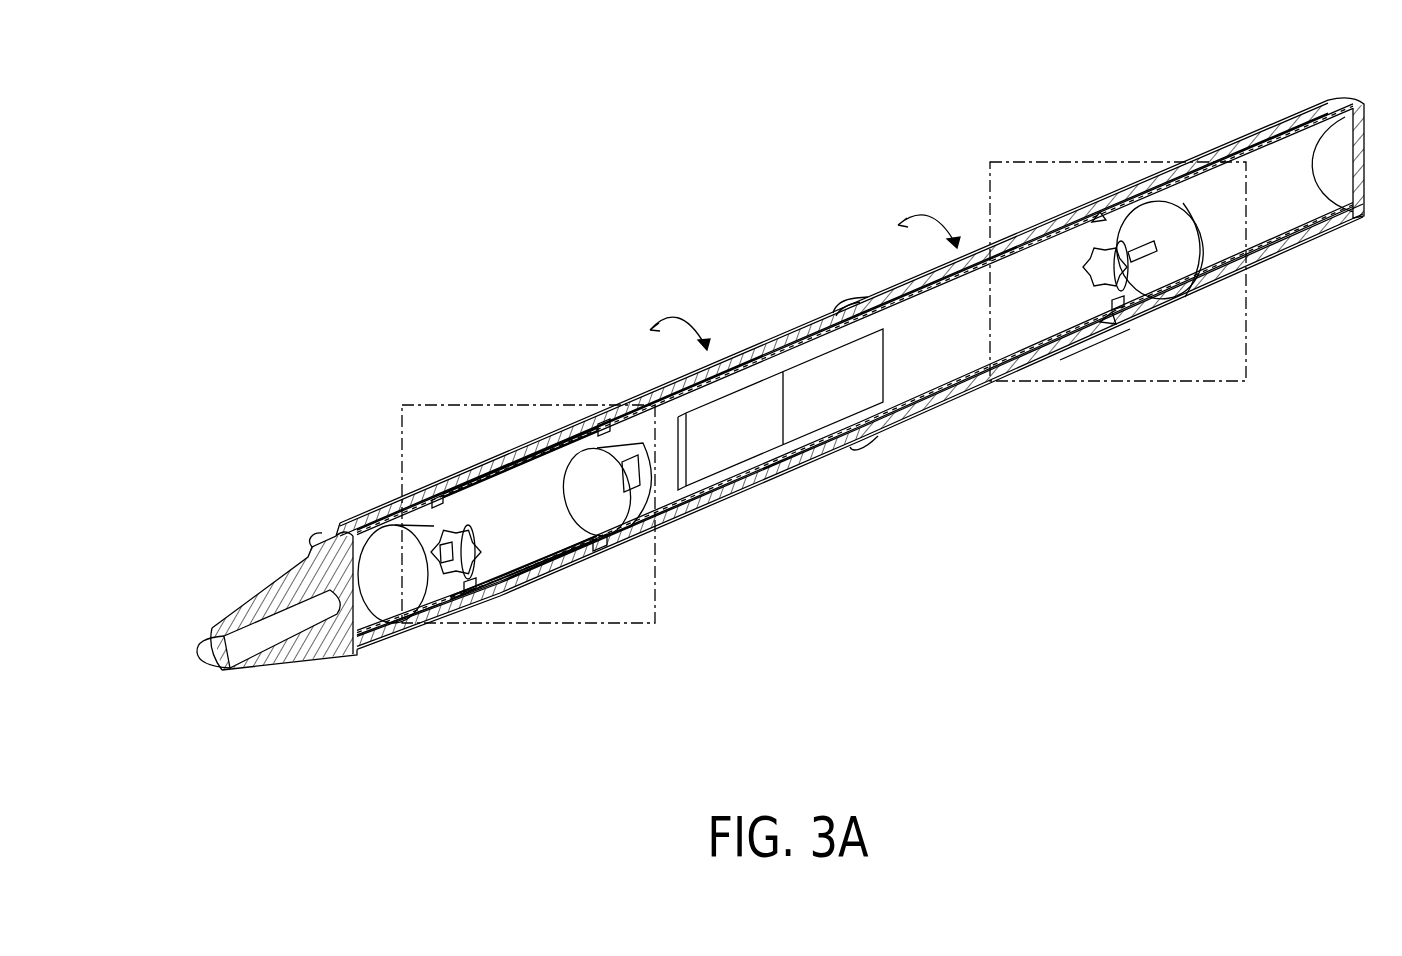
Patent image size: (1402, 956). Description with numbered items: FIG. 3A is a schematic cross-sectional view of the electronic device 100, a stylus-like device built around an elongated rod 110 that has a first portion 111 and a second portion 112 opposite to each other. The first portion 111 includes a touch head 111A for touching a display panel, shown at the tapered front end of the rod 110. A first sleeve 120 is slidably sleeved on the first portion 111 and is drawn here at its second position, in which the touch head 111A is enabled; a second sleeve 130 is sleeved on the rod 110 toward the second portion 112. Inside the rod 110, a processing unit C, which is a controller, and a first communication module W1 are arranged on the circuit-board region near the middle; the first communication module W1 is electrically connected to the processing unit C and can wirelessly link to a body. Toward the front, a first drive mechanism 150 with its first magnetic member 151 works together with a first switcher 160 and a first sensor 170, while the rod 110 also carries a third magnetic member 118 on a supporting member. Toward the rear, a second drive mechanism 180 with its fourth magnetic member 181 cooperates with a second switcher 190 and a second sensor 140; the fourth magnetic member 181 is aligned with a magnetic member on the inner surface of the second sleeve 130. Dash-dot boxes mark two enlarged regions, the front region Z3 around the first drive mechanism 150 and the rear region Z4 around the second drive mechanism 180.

The electronic device 100 is at (1338, 745).
The rod 110 is at (1001, 654).
The first portion 111 is at (390, 643).
The touch head 111A is at (201, 650).
The second portion 112 is at (1312, 237).
The third magnetic member 118 is at (633, 477).
The first sleeve 120 is at (770, 345).
The second sleeve 130 is at (870, 303).
The second sensor 140 is at (1113, 310).
The first drive mechanism 150 is at (517, 326).
The first magnetic member 151 is at (468, 532).
The first switcher 160 is at (435, 595).
The first sensor 170 is at (497, 602).
The second drive mechanism 180 is at (1195, 199).
The fourth magnetic member 181 is at (1131, 245).
The second switcher 190 is at (1197, 252).
The processing unit C is at (740, 447).
The first communication module W1 is at (845, 402).
The zone Z3 is at (401, 441).
The zone Z4 is at (990, 163).